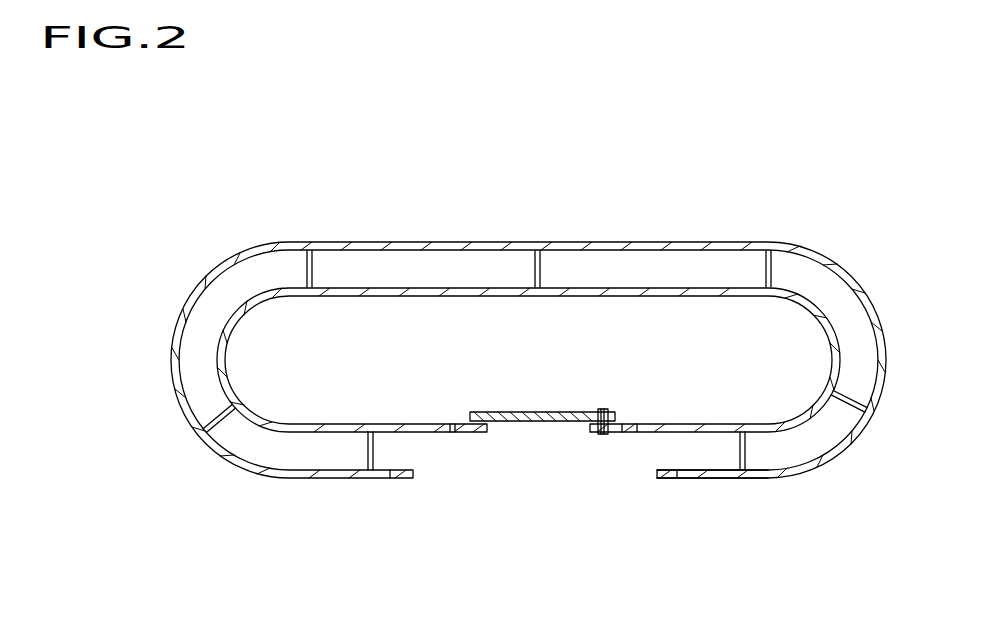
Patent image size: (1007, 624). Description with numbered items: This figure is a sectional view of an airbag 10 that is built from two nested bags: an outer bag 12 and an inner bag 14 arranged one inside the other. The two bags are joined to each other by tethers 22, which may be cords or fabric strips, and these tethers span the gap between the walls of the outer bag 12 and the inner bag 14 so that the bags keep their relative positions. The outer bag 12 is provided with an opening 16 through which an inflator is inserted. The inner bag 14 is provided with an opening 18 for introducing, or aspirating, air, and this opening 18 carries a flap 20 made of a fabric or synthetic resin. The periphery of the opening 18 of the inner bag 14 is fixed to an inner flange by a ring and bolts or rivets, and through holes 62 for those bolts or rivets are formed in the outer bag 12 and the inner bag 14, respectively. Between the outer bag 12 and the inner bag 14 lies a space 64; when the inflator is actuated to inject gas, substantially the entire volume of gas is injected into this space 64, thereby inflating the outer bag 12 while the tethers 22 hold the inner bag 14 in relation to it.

The airbag 10 is at (735, 195).
The outer bag 12 is at (458, 243).
The inner bag 14 is at (666, 297).
The opening 16 is at (657, 480).
The opening 18 is at (590, 434).
The flap 20 is at (524, 413).
The tethers 22 is at (313, 268).
The through holes 62 is at (630, 422).
The space 64 is at (212, 377).